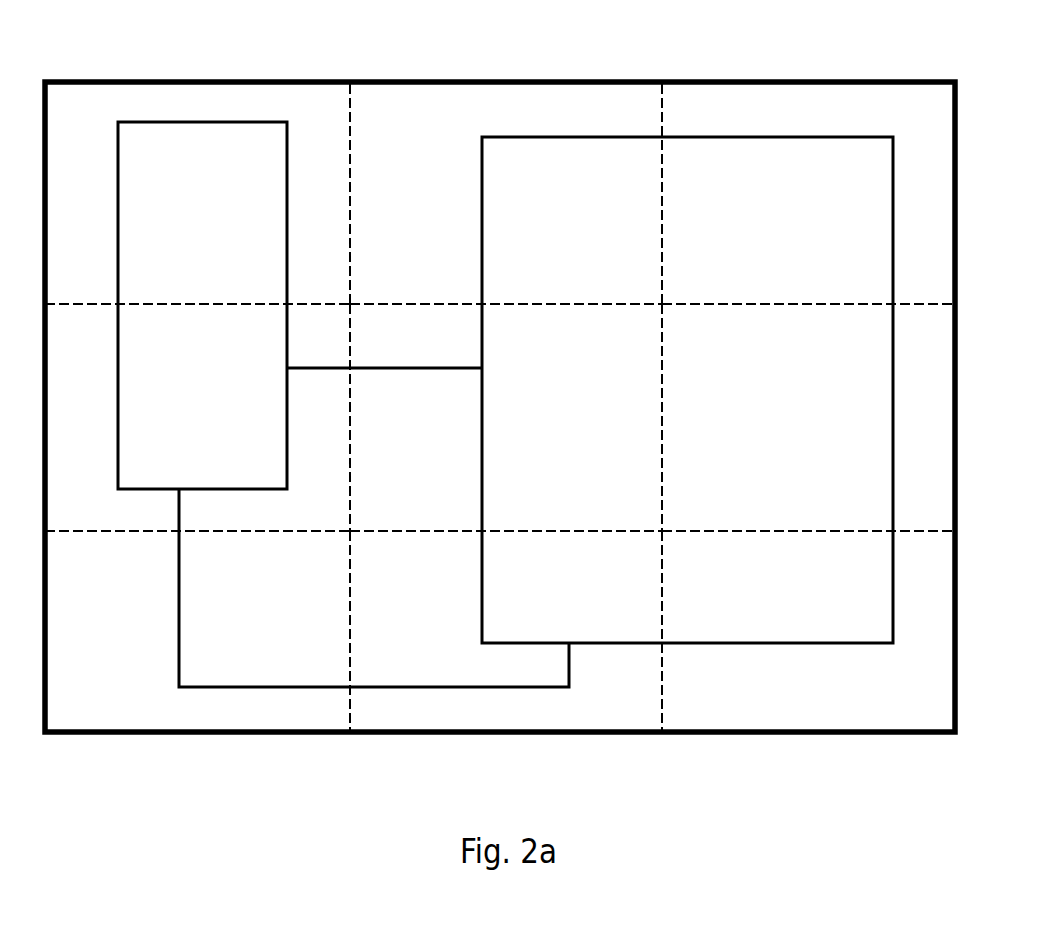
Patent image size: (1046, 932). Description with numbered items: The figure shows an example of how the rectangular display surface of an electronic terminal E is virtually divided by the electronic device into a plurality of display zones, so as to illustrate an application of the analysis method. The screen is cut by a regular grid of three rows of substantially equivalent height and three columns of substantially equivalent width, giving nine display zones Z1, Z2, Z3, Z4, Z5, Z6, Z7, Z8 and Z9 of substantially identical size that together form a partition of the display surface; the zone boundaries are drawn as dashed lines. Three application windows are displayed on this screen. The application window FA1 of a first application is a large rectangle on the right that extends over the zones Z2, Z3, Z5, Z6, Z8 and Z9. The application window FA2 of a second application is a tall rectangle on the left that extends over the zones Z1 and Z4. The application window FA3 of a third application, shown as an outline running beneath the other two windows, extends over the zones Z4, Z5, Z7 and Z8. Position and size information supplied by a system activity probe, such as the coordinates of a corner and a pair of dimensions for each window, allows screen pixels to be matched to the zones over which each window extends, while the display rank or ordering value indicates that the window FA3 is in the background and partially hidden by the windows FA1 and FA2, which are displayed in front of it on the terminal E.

The electronic device / housing E is at (857, 735).
The application window of a first application FA1 is at (762, 137).
The application window of a second application FA2 is at (203, 122).
The application window of a third application FA3 is at (247, 687).
The display zone Z1 is at (197, 194).
The display zone Z2 is at (506, 194).
The display zone Z3 is at (808, 200).
The display zone Z4 is at (197, 417).
The display zone Z5 is at (506, 417).
The display zone Z6 is at (808, 423).
The display zone Z7 is at (204, 630).
The display zone Z8 is at (512, 630).
The display zone Z9 is at (686, 557).